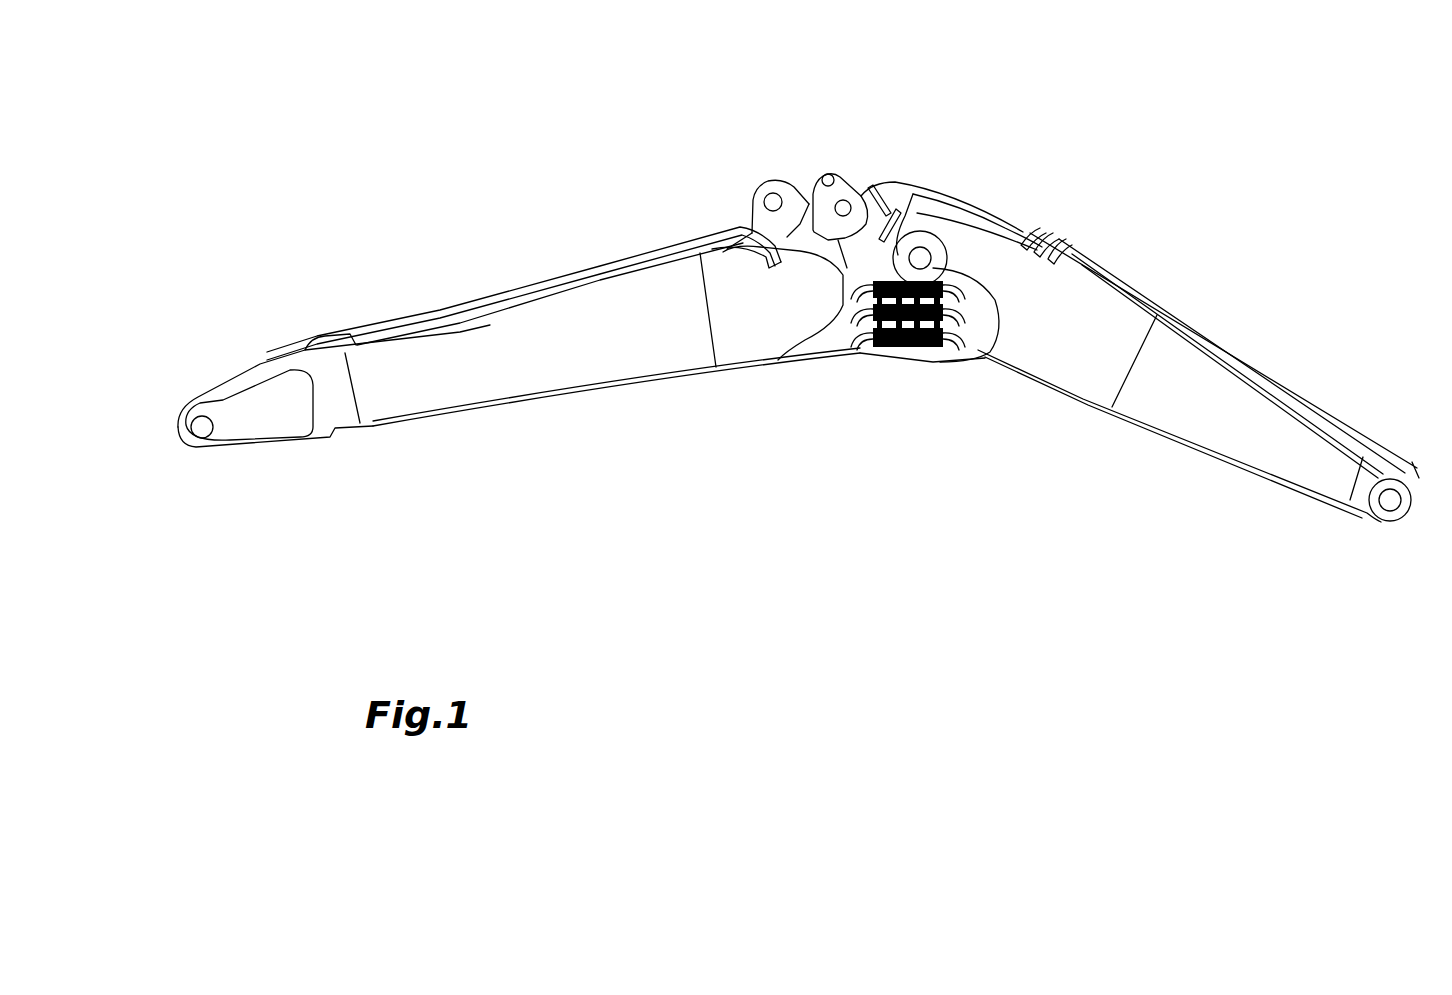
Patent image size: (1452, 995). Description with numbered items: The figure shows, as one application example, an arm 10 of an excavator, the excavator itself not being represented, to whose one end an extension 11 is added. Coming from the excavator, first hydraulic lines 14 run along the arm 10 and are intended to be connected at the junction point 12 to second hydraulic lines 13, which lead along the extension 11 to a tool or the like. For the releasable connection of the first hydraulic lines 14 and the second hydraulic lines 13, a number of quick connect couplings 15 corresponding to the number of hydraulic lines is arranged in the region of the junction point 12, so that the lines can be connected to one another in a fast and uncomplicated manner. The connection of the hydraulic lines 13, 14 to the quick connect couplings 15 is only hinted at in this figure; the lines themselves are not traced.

The arm 10 is at (1190, 373).
The extension 11 is at (521, 337).
The junction point 12 is at (895, 150).
The second hydraulic lines 13 is at (623, 257).
The first hydraulic lines 14 is at (1095, 257).
The quick connect couplings 15 is at (906, 300).